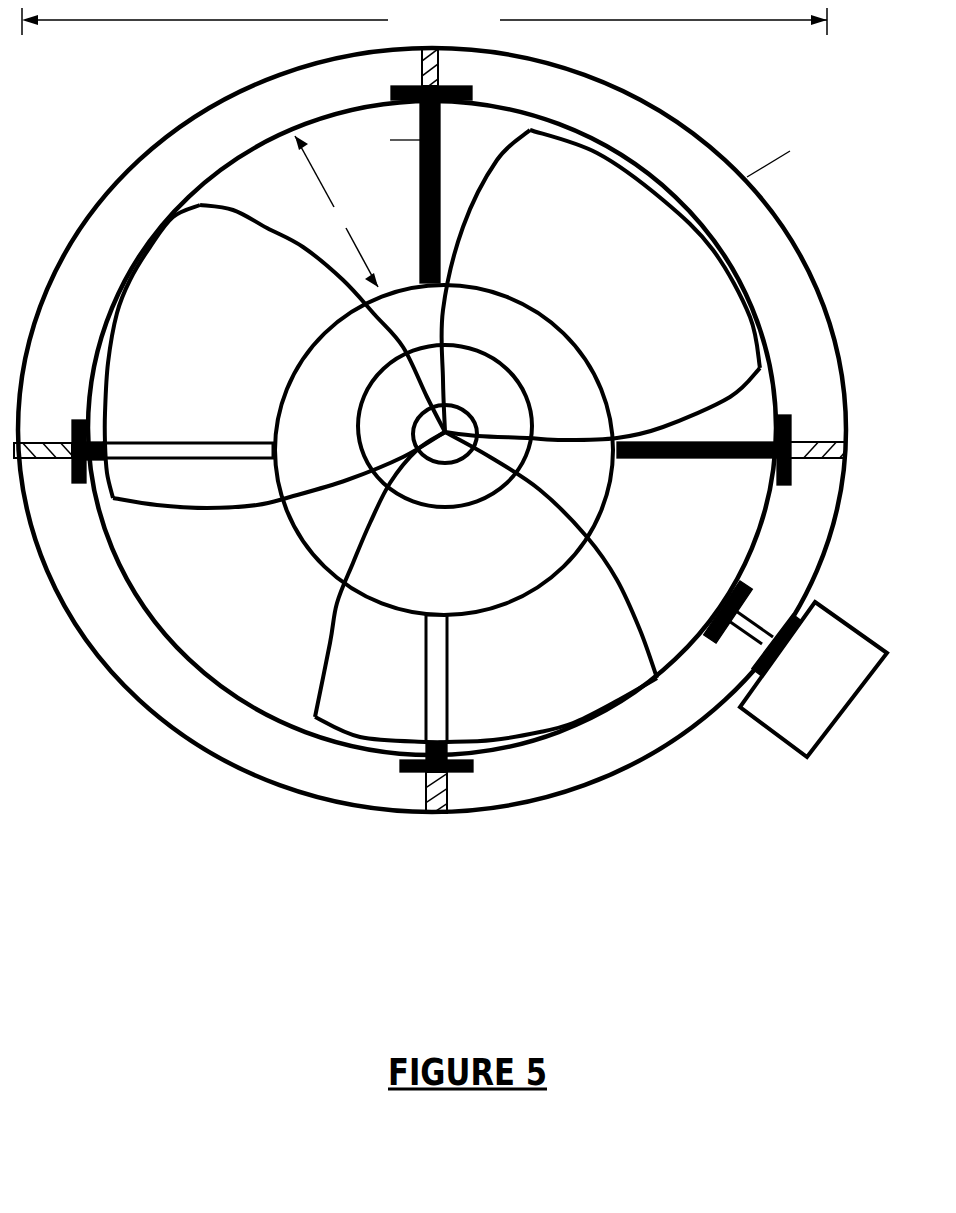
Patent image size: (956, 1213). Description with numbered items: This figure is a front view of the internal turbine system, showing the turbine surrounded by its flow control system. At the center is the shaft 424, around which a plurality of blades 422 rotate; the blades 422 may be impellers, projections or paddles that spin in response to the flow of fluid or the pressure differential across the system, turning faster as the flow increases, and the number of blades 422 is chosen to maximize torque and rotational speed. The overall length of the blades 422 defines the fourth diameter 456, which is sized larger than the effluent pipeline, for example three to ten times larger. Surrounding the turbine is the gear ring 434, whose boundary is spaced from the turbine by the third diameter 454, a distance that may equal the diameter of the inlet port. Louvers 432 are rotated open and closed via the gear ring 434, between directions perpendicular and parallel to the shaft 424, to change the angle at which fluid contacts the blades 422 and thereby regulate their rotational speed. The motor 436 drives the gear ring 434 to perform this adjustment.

The blades 422 is at (530, 192).
The shaft 424 is at (460, 407).
The louvers 432 is at (682, 465).
The gear ring 434 is at (757, 530).
The motor 436 is at (847, 613).
The third diameter 454 is at (336, 211).
The fourth diameter 456 is at (424, 21).